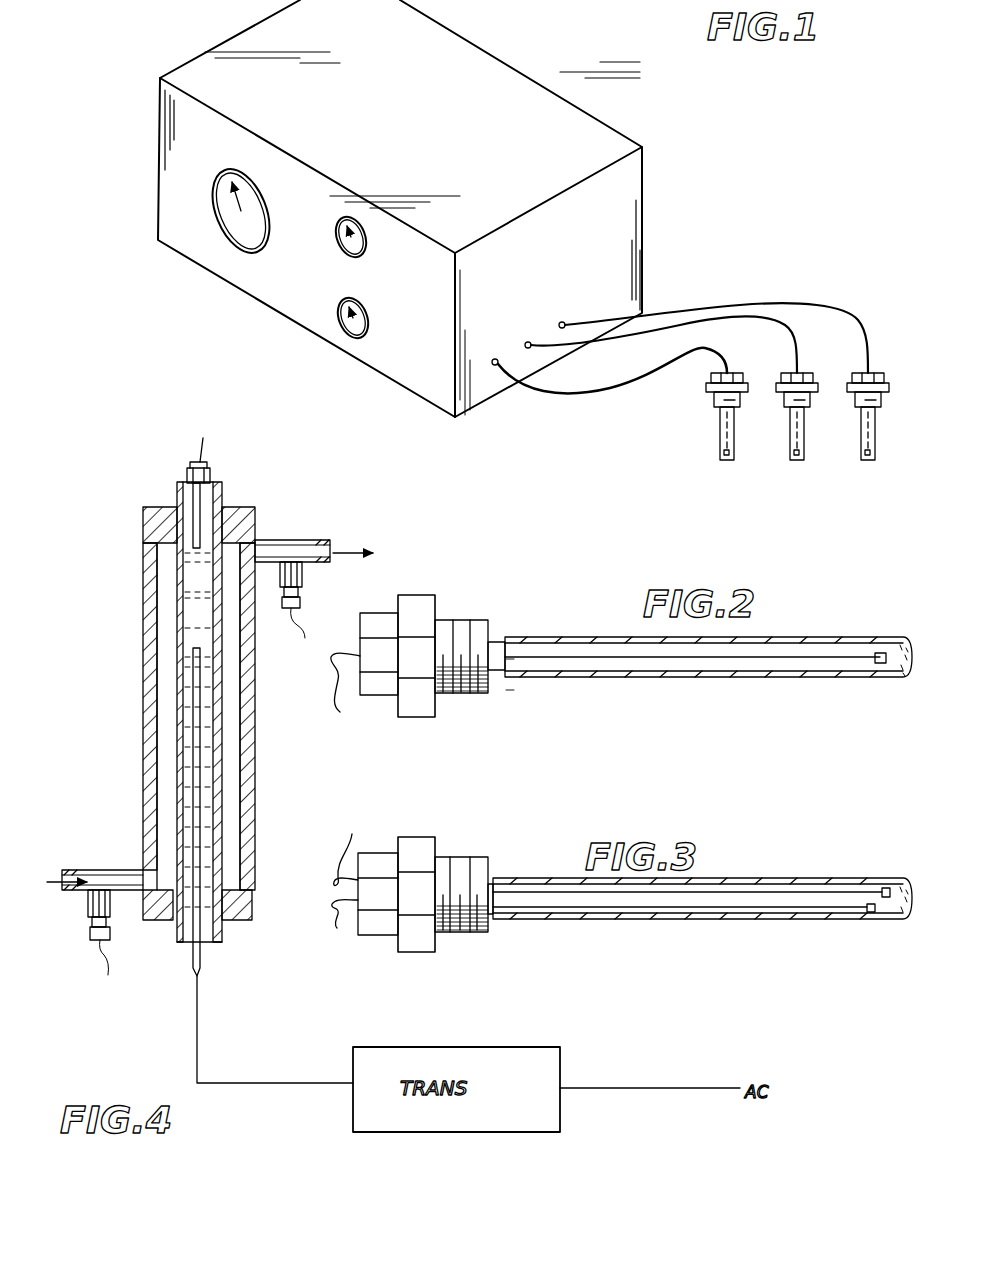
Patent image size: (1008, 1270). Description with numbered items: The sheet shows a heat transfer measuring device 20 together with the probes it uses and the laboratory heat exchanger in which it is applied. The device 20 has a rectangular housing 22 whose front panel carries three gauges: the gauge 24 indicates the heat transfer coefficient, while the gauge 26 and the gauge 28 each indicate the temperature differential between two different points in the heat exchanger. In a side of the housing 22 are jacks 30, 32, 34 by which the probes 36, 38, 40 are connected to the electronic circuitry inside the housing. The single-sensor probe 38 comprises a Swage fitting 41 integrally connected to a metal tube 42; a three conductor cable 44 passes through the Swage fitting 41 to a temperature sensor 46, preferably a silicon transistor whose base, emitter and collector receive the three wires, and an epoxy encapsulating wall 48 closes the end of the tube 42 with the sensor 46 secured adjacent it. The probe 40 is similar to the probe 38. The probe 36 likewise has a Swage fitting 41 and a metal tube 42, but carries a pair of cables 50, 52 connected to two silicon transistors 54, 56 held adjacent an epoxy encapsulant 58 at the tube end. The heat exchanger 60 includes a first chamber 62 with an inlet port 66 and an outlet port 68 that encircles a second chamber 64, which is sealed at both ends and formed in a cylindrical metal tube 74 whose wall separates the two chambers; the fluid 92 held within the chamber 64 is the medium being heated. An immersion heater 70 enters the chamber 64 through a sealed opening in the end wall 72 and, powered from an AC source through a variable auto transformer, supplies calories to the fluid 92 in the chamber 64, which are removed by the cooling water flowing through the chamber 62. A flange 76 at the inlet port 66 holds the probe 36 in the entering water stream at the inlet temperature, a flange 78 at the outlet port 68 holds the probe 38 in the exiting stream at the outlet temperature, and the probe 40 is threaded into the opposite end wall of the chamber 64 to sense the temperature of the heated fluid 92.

In FIG. 1, the heat transfer measuring device 20 is at (402, 208).
In FIG. 1, the rectangular housing 22 is at (582, 120).
In FIG. 1, the gauge 24 is at (218, 178).
In FIG. 1, the gauge 26 is at (366, 245).
In FIG. 1, the gauge 28 is at (367, 323).
In FIG. 1, the jack 30 is at (495, 366).
In FIG. 1, the jack 32 is at (533, 341).
In FIG. 1, the jack 34 is at (565, 324).
In FIG. 1, the probe 36 is at (718, 433).
In FIG. 3, the probe 36 is at (627, 900).
In FIG. 4, the probe 36 is at (108, 975).
In FIG. 1, the probe 38 is at (790, 432).
In FIG. 2, the probe 38 is at (631, 674).
In FIG. 4, the probe 38 is at (316, 625).
In FIG. 1, the probe 40 is at (877, 433).
In FIG. 4, the probe 40 is at (212, 480).
In FIG. 2, the Swage fitting 41 is at (420, 717).
In FIG. 3, the Swage fitting 41 is at (417, 952).
In FIG. 2, the metal tube 42 is at (850, 667).
In FIG. 3, the metal tube 42 is at (530, 917).
In FIG. 2, the three conductor cable 44 is at (450, 666).
In FIG. 2, the temperature sensor 46 is at (882, 653).
In FIG. 2, the encapsulating wall 48 is at (913, 660).
In FIG. 3, the cable 50 is at (797, 908).
In FIG. 3, the cable 52 is at (557, 857).
In FIG. 3, the silicon transistor 54 is at (870, 913).
In FIG. 3, the silicon transistor 56 is at (887, 888).
In FIG. 3, the epoxy encapsulant 58 is at (917, 908).
In FIG. 4, the heat exchanger 60 is at (280, 723).
In FIG. 4, the first chamber 62 is at (230, 875).
In FIG. 4, the second chamber 64 is at (193, 582).
In FIG. 4, the inlet port 66 is at (125, 882).
In FIG. 4, the outlet port 68 is at (303, 552).
In FIG. 4, the immersion heater 70 is at (198, 922).
In FIG. 4, the end wall 72 is at (208, 943).
In FIG. 4, the metal tube 74 is at (177, 928).
In FIG. 4, the flange 76 is at (88, 915).
In FIG. 4, the flange 78 is at (302, 583).
In FIG. 4, the test fluid 92 is at (178, 628).